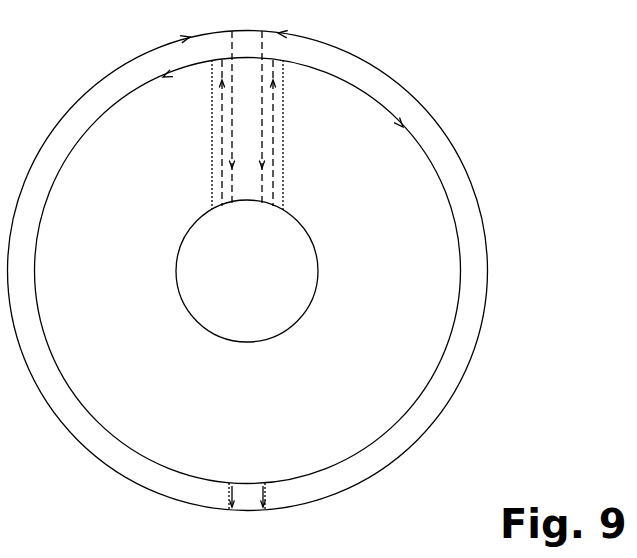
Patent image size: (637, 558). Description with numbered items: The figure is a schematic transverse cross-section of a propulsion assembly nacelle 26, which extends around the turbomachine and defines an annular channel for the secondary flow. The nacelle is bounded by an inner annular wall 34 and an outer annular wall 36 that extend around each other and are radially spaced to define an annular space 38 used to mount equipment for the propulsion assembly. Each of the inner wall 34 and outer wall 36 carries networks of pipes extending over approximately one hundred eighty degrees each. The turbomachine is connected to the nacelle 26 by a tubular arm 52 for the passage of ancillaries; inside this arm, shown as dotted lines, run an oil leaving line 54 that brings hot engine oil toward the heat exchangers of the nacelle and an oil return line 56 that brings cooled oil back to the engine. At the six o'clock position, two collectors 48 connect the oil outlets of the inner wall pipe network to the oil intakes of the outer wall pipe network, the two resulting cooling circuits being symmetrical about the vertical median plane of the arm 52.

The nacelle 26 is at (481, 176).
The inner annular wall 34 is at (381, 441).
The outer annular wall 36 is at (438, 423).
The annular space 38 is at (472, 233).
The collectors 48 is at (236, 487).
The tubular arm 52 is at (283, 147).
The oil leaving line 54 is at (212, 140).
The oil return line 56 is at (273, 107).